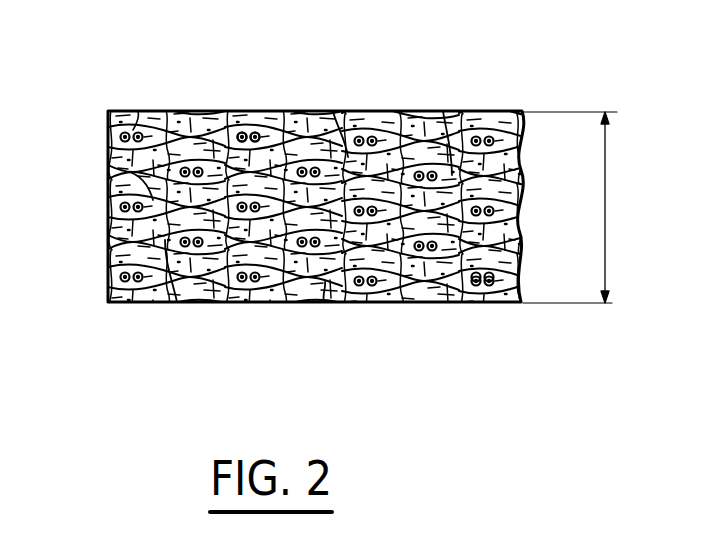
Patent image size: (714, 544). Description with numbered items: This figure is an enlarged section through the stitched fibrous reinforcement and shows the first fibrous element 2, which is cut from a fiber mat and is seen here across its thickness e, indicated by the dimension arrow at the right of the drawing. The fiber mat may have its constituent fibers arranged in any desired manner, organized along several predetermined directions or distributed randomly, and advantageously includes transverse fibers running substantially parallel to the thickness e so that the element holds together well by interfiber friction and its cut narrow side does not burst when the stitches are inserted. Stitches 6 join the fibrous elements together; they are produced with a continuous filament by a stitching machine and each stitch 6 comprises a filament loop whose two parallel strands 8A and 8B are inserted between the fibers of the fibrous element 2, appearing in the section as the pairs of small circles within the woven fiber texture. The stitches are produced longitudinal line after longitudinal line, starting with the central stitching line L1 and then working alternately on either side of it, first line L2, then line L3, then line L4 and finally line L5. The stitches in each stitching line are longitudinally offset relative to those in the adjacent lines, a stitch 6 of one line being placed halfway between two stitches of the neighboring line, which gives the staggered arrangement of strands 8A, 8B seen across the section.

The first fibrous element 2 is at (396, 303).
The stitches 6 is at (138, 111).
The strand of filament loop 8A is at (229, 111).
The strand of filament loop 8B is at (265, 111).
The central stitching line L1 is at (130, 172).
The stitching line L2 is at (177, 302).
The stitching line L3 is at (443, 111).
The stitching line L4 is at (324, 302).
The stitching line L5 is at (333, 111).
The thickness e is at (574, 207).